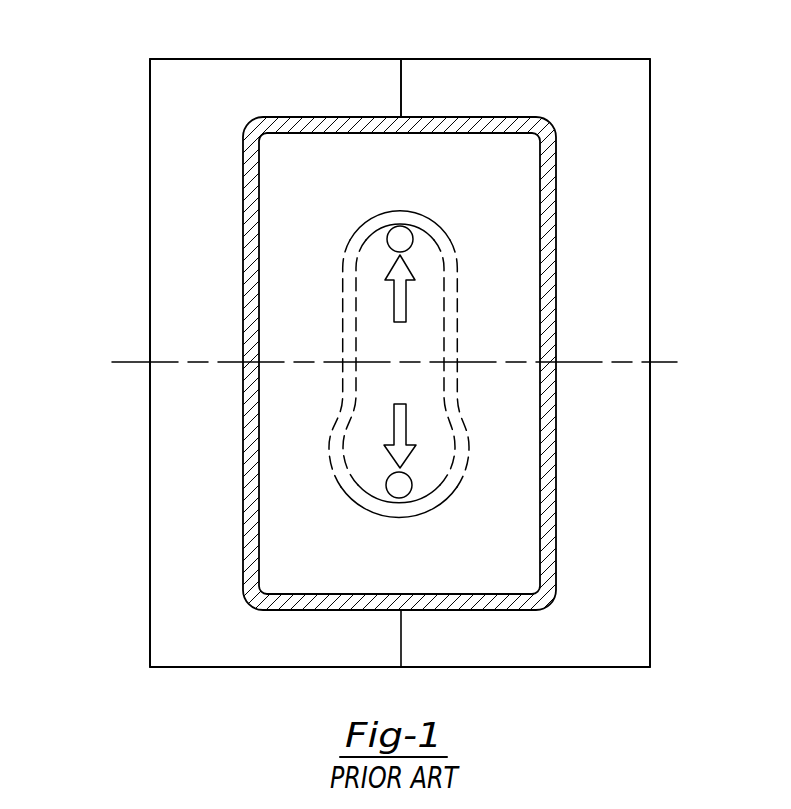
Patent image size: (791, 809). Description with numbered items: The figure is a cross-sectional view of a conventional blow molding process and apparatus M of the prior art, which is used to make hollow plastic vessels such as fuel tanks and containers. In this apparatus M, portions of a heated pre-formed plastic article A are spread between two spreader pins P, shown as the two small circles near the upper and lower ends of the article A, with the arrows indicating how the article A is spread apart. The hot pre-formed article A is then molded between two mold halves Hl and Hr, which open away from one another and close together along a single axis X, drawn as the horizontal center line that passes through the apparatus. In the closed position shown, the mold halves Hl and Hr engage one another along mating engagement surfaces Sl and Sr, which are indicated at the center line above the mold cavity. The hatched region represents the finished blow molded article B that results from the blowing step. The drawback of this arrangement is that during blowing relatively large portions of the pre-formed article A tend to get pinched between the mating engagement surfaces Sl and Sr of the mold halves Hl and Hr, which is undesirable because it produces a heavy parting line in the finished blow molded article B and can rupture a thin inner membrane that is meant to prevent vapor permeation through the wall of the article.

The blow molding process and apparatus M is at (104, 149).
The mating engagement surface SR is at (401, 95).
The mating engagement surface SL is at (401, 88).
The pre-formed plastic article A is at (412, 212).
The spreader pin P is at (393, 240).
The axis X is at (667, 362).
The finished blow molded article B is at (557, 466).
The mold half HL is at (194, 656).
The mold half HR is at (642, 660).